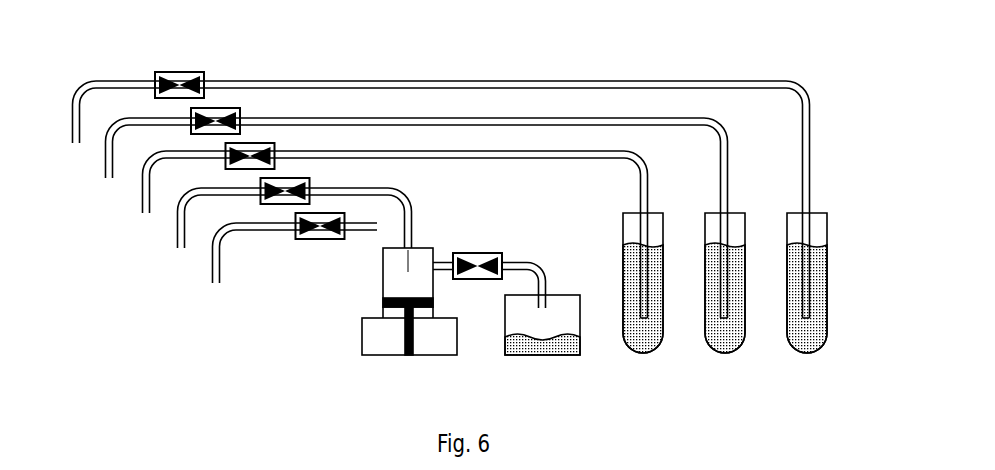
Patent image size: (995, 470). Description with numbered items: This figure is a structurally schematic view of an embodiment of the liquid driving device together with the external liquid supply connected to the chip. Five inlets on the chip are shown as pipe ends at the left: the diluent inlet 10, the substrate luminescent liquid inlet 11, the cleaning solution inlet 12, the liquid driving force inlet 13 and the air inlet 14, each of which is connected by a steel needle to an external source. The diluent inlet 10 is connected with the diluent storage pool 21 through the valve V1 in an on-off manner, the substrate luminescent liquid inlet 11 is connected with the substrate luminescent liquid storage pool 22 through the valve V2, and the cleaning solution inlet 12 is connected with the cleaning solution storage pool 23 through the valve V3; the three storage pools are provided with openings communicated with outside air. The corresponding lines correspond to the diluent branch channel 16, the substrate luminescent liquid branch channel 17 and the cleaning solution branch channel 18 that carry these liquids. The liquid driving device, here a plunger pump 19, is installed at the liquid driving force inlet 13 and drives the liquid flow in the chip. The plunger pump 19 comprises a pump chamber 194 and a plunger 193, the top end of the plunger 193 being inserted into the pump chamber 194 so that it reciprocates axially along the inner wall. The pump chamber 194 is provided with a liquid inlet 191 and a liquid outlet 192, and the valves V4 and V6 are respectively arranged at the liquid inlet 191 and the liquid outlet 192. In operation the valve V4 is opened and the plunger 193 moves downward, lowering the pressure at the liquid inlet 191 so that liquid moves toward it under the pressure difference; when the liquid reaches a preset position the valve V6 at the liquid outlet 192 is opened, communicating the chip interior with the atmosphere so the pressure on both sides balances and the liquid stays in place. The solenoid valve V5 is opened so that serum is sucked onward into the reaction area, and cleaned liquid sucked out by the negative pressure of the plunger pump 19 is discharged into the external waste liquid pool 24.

The diluent inlet 10 is at (76, 152).
The substrate luminescent liquid inlet 11 is at (112, 189).
The cleaning solution inlet 12 is at (146, 226).
The liquid driving force inlet 13 is at (180, 256).
The air inlet 14 is at (216, 292).
The diluent branch channel 16 is at (608, 81).
The substrate luminescent liquid branch channel 17 is at (682, 117).
The cleaning solution branch channel 18 is at (543, 151).
The plunger pump 19 is at (417, 284).
The liquid inlet of the plunger pump 191 is at (408, 273).
The liquid outlet of the plunger pump 192 is at (420, 272).
The plunger 193 is at (400, 325).
The pump chamber 194 is at (378, 345).
The diluent storage pool 21 is at (805, 355).
The substrate luminescent liquid storage pool 22 is at (727, 355).
The cleaning solution storage pool 23 is at (643, 355).
The waste liquid pool 24 is at (544, 357).
The valve V1 is at (181, 72).
The valve V2 is at (218, 99).
The valve V3 is at (251, 135).
The valve V4 is at (288, 168).
The solenoid valve V5 is at (326, 201).
The valve V6 is at (480, 240).